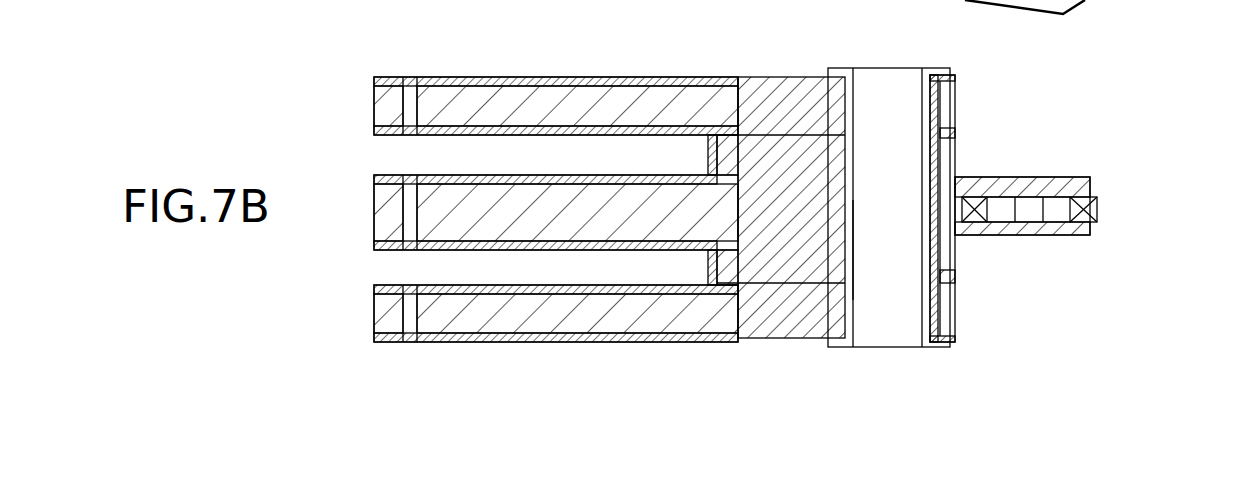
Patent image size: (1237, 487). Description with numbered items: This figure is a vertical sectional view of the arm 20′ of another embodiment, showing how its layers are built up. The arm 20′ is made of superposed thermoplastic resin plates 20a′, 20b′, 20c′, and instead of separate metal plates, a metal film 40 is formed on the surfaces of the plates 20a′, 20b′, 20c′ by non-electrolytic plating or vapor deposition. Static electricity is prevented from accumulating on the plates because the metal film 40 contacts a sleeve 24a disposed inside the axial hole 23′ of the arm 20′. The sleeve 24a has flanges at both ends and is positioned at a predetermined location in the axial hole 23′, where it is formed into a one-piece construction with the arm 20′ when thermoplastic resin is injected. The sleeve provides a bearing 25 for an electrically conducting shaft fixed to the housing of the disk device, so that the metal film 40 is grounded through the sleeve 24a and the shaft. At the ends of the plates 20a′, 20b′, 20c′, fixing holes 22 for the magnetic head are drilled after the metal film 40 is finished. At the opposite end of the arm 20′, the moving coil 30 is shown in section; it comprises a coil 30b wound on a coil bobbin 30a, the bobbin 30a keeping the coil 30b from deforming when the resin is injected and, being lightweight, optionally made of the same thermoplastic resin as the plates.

The arm 20′ is at (666, 352).
The plate 20a′ is at (553, 107).
The plate 20b′ is at (478, 218).
The plate 20c′ is at (597, 322).
The fixing hole 22 is at (405, 110).
The axial hole 23′ is at (938, 340).
The sleeve 24a is at (853, 258).
The bearing 25 is at (873, 90).
The moving coil 30 is at (1074, 212).
The coil bobbin 30a is at (1053, 212).
The coil 30b is at (990, 190).
The metal film 40 is at (458, 77).